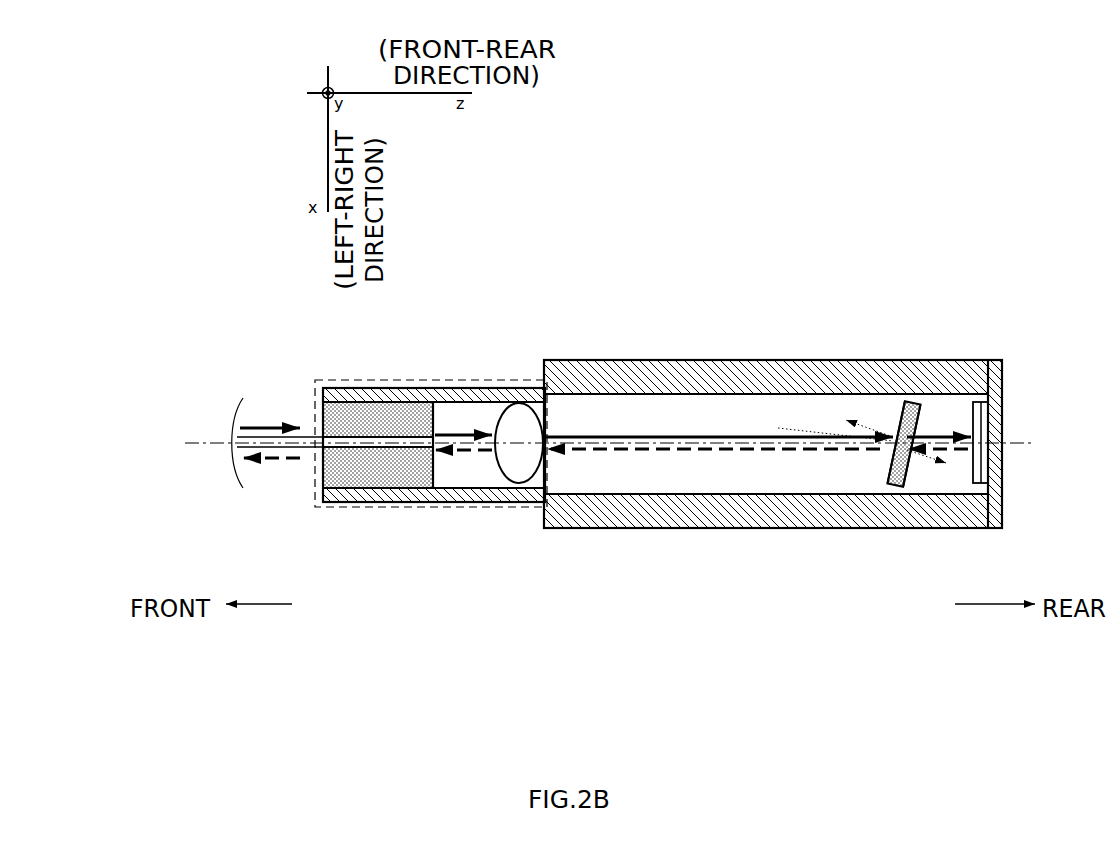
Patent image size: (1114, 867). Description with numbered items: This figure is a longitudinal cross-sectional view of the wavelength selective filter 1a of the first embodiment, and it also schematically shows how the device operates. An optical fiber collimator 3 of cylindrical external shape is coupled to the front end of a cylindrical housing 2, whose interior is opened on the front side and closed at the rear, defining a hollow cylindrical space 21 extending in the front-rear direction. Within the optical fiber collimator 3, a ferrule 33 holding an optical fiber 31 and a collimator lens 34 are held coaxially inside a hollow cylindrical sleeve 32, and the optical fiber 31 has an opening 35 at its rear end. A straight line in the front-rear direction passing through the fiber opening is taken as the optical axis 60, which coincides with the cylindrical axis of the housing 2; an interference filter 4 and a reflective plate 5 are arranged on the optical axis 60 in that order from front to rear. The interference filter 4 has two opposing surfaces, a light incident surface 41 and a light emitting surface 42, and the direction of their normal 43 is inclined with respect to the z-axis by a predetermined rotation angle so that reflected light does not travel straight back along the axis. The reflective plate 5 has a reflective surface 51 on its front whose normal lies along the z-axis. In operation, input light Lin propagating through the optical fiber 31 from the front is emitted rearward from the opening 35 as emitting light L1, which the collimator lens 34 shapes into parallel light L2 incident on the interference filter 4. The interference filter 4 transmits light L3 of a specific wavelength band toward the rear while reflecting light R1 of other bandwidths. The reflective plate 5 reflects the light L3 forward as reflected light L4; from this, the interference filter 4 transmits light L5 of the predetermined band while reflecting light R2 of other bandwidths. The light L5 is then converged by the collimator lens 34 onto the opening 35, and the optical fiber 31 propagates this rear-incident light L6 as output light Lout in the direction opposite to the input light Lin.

The wavelength selective filter 1a is at (839, 269).
The housing 2 is at (720, 370).
The hollow cylindrical space 21 is at (613, 406).
The optical fiber collimator 3 is at (437, 506).
The optical fiber 31 is at (340, 508).
The sleeve 32 is at (378, 510).
The ferrule 33 is at (367, 415).
The collimator lens 34 is at (520, 413).
The opening 35 is at (430, 436).
The interference filter 4 is at (893, 490).
The light incident surface 41 is at (894, 408).
The light emitting surface 42 is at (908, 483).
The normal 43 is at (808, 425).
The reflective plate 5 is at (1002, 477).
The reflective surface 51 is at (970, 422).
The optical axis 60 is at (210, 437).
The emitting light L1 is at (463, 423).
The parallel light L2 is at (719, 424).
The transmitted light L3 is at (932, 433).
The reflected light L4 is at (982, 456).
The transmitted light L5 is at (713, 465).
The incident light L6 is at (463, 465).
The input light Lin is at (392, 484).
The output light Lout is at (271, 473).
The reflected light R1 is at (867, 420).
The reflected light R2 is at (950, 470).